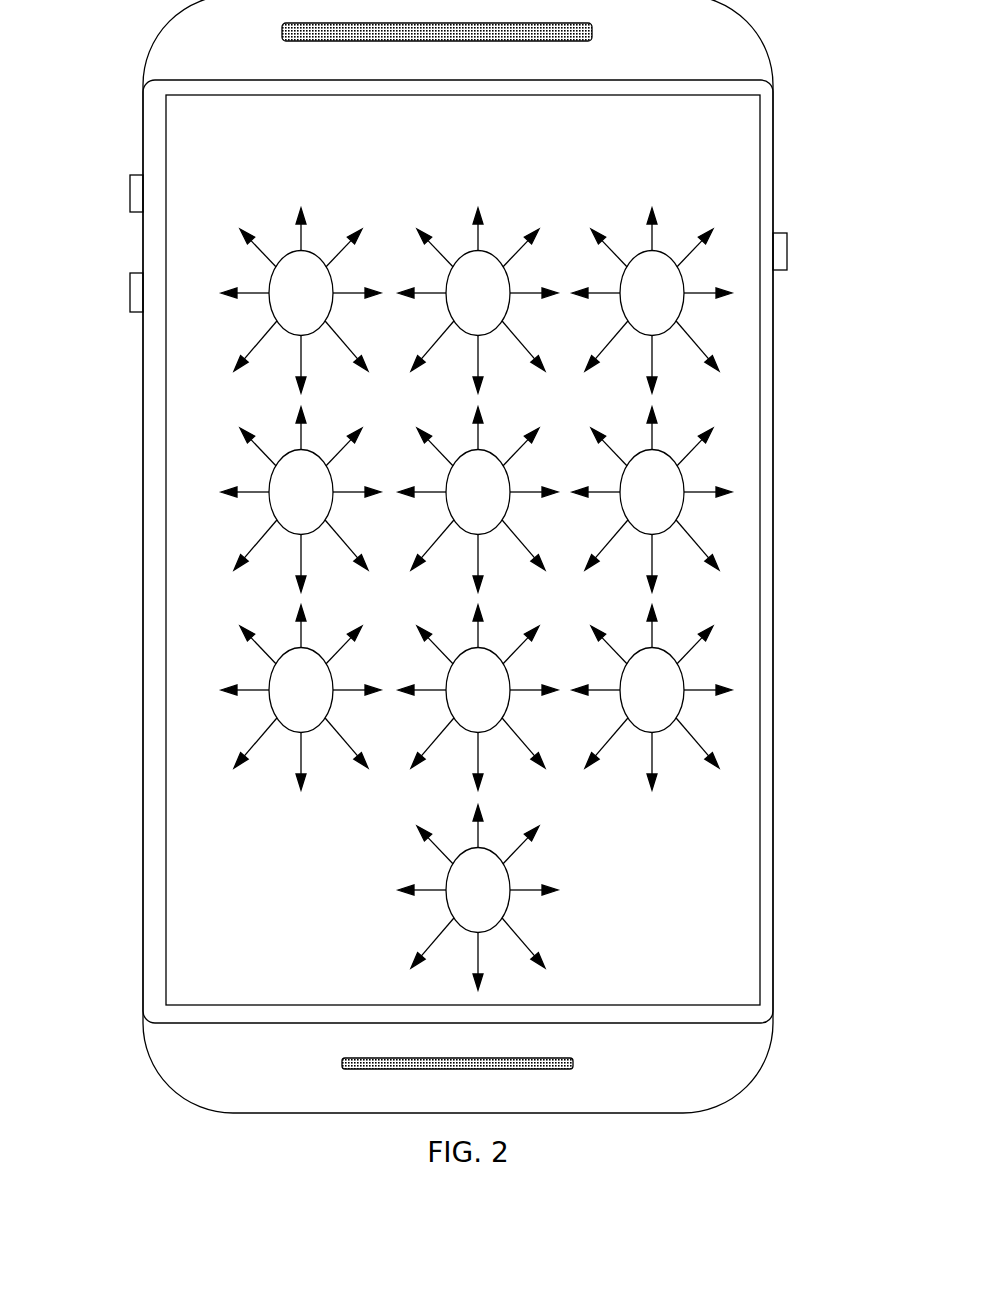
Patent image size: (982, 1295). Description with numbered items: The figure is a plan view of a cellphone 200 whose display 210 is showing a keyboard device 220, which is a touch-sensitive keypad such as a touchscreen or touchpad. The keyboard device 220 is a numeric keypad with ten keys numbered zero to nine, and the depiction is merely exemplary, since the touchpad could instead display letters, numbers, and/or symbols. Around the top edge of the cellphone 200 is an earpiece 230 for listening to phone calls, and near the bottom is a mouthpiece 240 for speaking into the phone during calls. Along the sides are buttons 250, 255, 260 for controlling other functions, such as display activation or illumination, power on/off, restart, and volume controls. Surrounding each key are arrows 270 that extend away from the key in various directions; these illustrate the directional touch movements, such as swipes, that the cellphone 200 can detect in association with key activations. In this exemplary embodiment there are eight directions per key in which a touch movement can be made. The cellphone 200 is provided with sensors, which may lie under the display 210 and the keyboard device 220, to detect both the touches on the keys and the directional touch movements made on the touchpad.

The cellphone 200 is at (157, 37).
The display 210 is at (715, 172).
The keyboard device 220 is at (332, 989).
The earpiece 230 is at (592, 30).
The mouthpiece 240 is at (573, 1062).
The button 250 is at (130, 190).
The button 255 is at (130, 290).
The button 260 is at (787, 248).
The arrows 270 is at (698, 490).